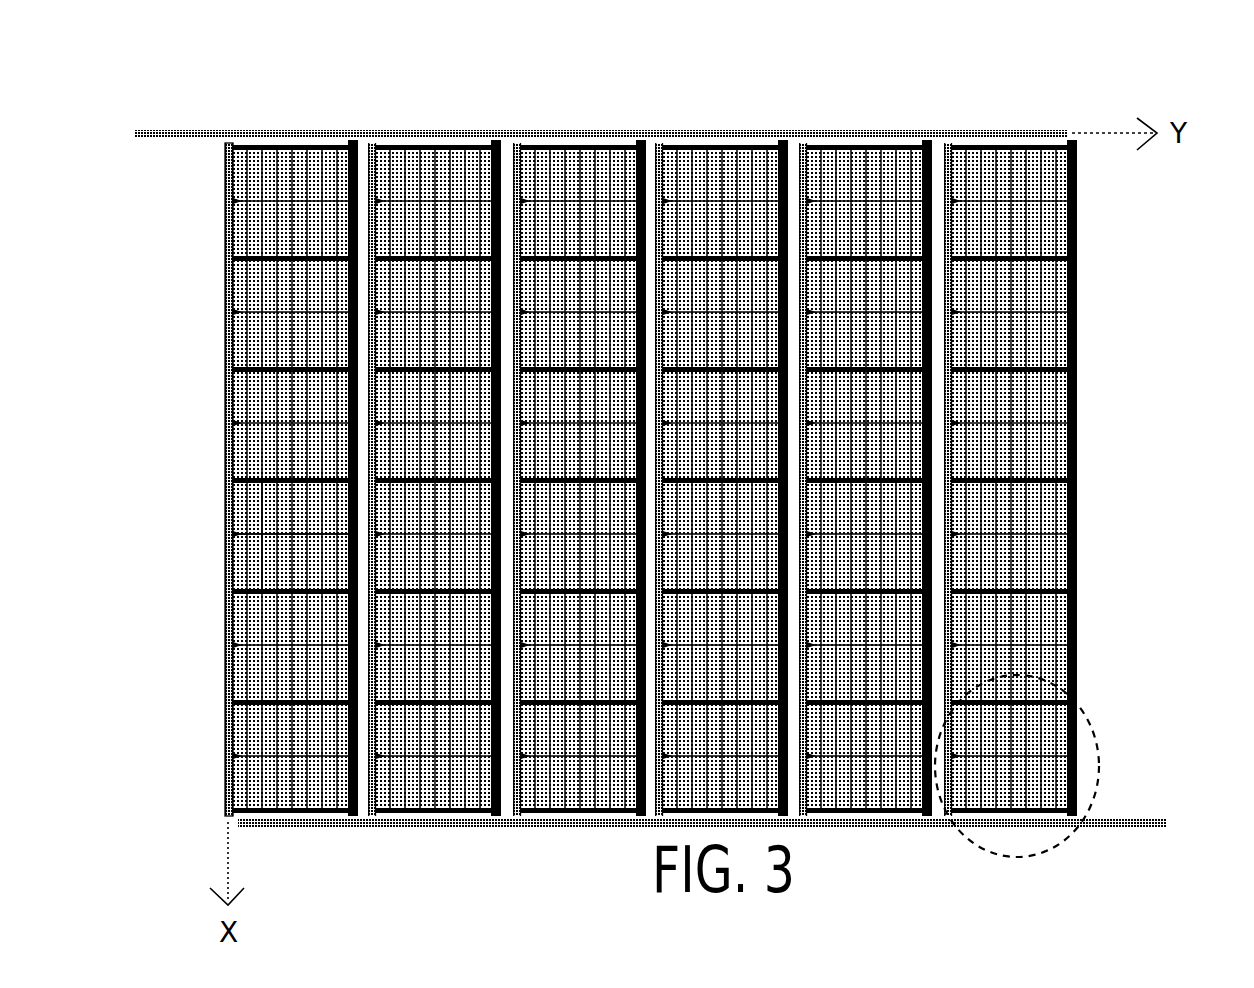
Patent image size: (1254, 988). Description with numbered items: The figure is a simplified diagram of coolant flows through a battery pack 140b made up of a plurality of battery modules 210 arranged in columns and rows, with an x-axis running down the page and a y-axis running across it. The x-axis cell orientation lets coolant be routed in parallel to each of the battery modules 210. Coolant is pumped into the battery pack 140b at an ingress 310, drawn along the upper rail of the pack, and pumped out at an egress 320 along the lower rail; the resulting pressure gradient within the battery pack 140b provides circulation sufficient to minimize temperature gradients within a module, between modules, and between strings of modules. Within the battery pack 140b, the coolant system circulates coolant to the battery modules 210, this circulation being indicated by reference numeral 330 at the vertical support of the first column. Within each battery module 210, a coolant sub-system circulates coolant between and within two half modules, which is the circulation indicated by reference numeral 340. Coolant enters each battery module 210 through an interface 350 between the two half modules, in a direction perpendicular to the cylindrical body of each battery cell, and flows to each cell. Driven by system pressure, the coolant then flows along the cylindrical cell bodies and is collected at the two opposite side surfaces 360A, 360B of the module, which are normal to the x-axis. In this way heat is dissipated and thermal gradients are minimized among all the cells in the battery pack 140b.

The battery pack 140b is at (263, 82).
The ingress 310 is at (153, 140).
The egress 320 is at (1116, 830).
The coolant circulation to battery modules 330 is at (232, 288).
The coolant circulation within battery module 340 is at (239, 572).
The interface 350 is at (260, 533).
The side surface 360A is at (226, 484).
The side surface 360B is at (255, 590).
The battery module 210 is at (1072, 766).